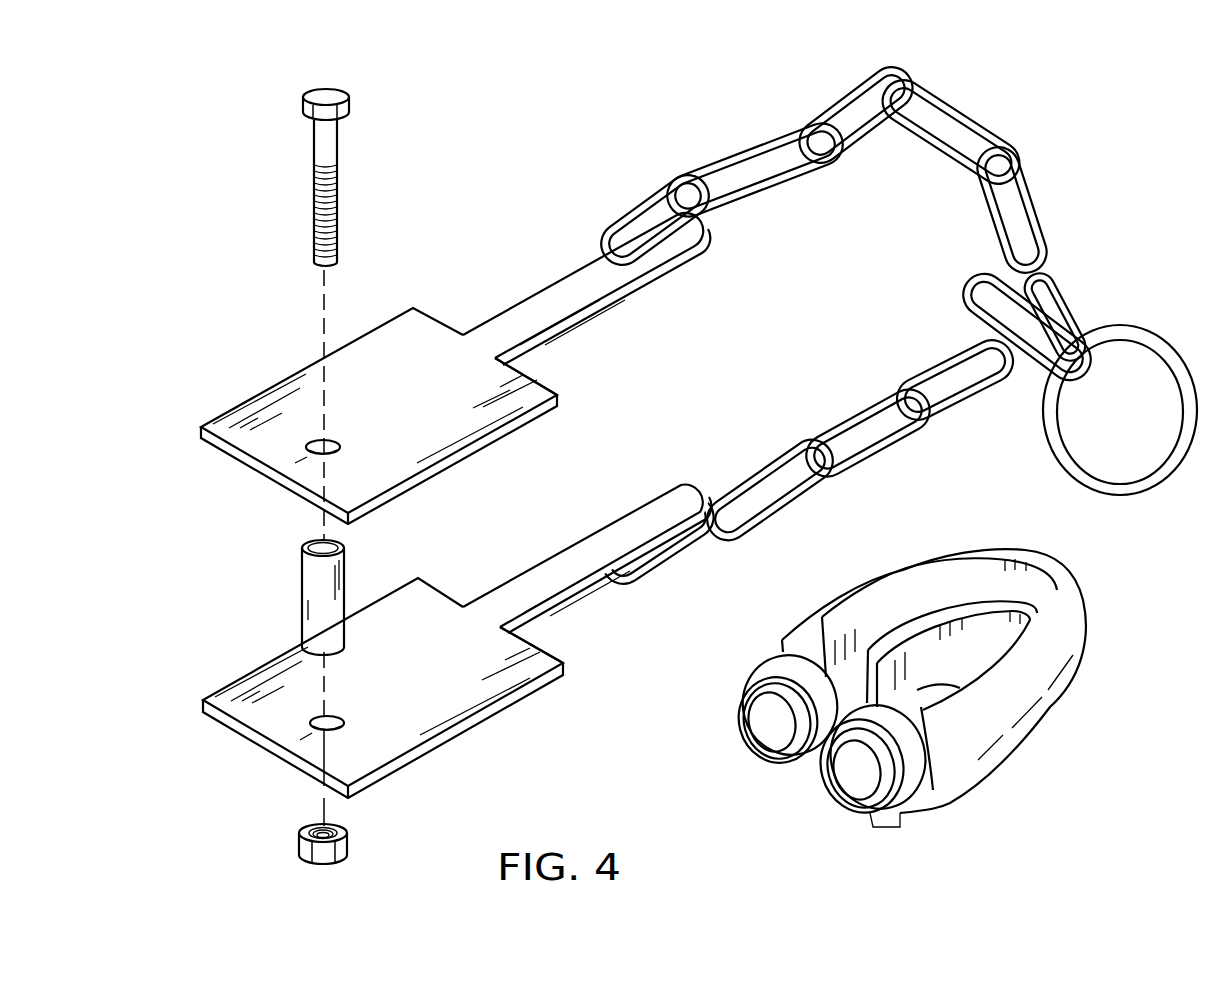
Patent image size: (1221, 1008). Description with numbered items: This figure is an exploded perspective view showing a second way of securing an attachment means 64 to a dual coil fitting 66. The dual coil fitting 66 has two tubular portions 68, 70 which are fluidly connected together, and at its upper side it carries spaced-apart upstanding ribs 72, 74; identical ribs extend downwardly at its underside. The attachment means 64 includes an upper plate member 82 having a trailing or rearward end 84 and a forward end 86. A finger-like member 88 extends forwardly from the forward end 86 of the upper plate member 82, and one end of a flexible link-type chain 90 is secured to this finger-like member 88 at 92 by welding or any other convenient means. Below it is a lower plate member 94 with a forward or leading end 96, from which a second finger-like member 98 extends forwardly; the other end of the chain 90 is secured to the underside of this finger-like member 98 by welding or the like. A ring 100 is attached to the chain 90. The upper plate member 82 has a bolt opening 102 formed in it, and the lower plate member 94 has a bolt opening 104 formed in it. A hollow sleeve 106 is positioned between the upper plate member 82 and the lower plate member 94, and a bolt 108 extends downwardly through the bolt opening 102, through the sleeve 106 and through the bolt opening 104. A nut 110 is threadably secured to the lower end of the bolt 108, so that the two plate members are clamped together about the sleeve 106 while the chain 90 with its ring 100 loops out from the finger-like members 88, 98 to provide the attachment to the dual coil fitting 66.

The attachment means 64 is at (570, 216).
The dual coil fitting 66 is at (969, 535).
The tubular portion 68 is at (763, 715).
The tubular portion 70 is at (853, 790).
The upstanding rib 72 is at (907, 570).
The upstanding rib 74 is at (983, 652).
The upper plate member 82 is at (374, 312).
The trailing or rearward end 84 is at (272, 481).
The forward end 86 is at (530, 374).
The finger-like member 88 is at (528, 300).
The flexible link-type chain 90 is at (773, 127).
The chain securement point 92 is at (667, 243).
The lower plate member 94 is at (253, 747).
The forward or leading end 96 is at (537, 648).
The finger-like member 98 is at (598, 545).
The ring 100 is at (1137, 327).
The bolt opening 102 is at (328, 455).
The bolt opening 104 is at (323, 730).
The hollow sleeve 106 is at (300, 610).
The bolt 108 is at (330, 150).
The nut 110 is at (348, 848).